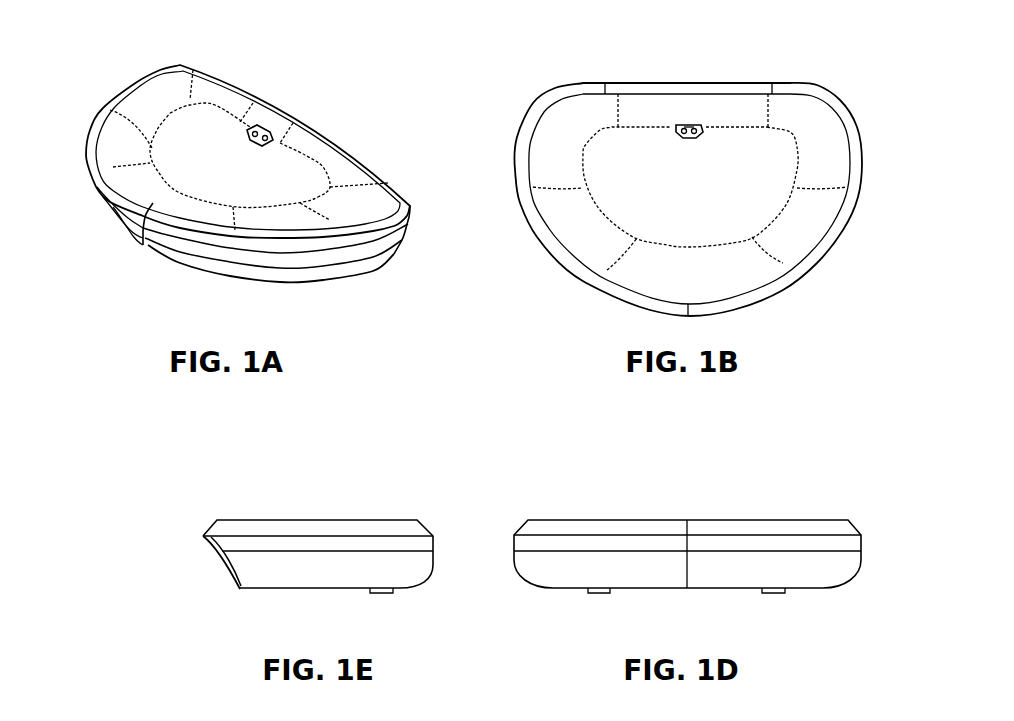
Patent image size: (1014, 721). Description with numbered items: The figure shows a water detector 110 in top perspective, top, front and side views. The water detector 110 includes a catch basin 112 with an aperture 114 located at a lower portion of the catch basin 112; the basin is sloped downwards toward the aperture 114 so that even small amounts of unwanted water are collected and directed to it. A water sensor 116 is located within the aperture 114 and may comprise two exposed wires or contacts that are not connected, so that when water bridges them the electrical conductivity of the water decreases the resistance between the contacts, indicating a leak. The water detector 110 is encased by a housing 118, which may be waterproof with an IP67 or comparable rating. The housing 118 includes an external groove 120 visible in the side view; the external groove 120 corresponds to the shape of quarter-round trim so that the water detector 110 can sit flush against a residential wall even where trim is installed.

In FIG. 1A, the water detector 110 is at (322, 108).
In FIG. 1A, the catch basin 112 is at (151, 108).
In FIG. 1B, the catch basin 112 is at (577, 120).
In FIG. 1A, the aperture 114 is at (263, 128).
In FIG. 1B, the aperture 114 is at (694, 127).
In FIG. 1B, the water sensor 116 is at (687, 127).
In FIG. 1B, the housing 118 is at (515, 153).
In FIG. 1D, the housing 118 is at (853, 569).
In FIG. 1E, the external groove 120 is at (205, 539).